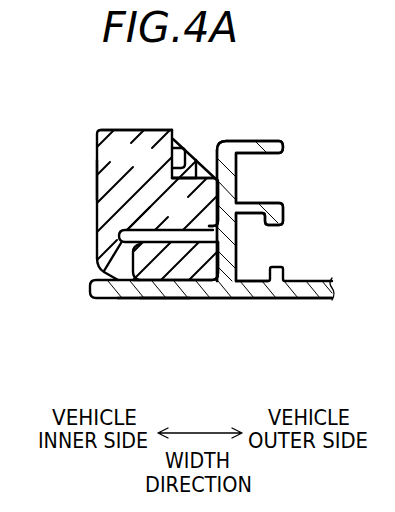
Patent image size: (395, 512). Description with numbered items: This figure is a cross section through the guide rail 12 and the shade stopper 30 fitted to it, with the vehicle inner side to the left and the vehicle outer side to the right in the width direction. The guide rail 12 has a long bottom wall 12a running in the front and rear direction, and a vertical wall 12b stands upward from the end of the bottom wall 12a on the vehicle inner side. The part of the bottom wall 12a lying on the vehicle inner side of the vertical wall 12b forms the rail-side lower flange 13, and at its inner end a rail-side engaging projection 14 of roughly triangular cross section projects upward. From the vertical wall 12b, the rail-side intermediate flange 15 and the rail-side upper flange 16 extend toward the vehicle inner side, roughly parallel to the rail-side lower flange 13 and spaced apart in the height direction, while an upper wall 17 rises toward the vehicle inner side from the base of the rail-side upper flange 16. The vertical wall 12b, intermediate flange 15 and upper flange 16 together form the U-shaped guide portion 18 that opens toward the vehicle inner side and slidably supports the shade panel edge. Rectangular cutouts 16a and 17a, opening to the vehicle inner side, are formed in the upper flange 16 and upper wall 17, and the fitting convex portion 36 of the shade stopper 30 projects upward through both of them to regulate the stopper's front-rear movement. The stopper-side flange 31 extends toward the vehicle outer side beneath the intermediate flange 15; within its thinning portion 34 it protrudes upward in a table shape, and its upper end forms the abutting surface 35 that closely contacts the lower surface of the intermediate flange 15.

The shade stopper 30 is at (95, 196).
The fitting convex portion 36 is at (134, 129).
The guide portion 18 is at (98, 178).
The upper wall 17 is at (188, 138).
The cutout 17a is at (175, 146).
The cutout 16a is at (147, 186).
The rail-side upper flange 16 is at (195, 202).
The rail-side intermediate flange 15 is at (119, 236).
The rail-side engaging projection 14 is at (118, 272).
The rail-side lower flange 13 is at (113, 300).
The guide rail 12 is at (240, 299).
The bottom wall 12a is at (202, 300).
The thinning portion 34 is at (160, 300).
The vertical wall 12b is at (240, 183).
The abutting surface 35 is at (238, 230).
The stopper-side flange 31 is at (238, 251).